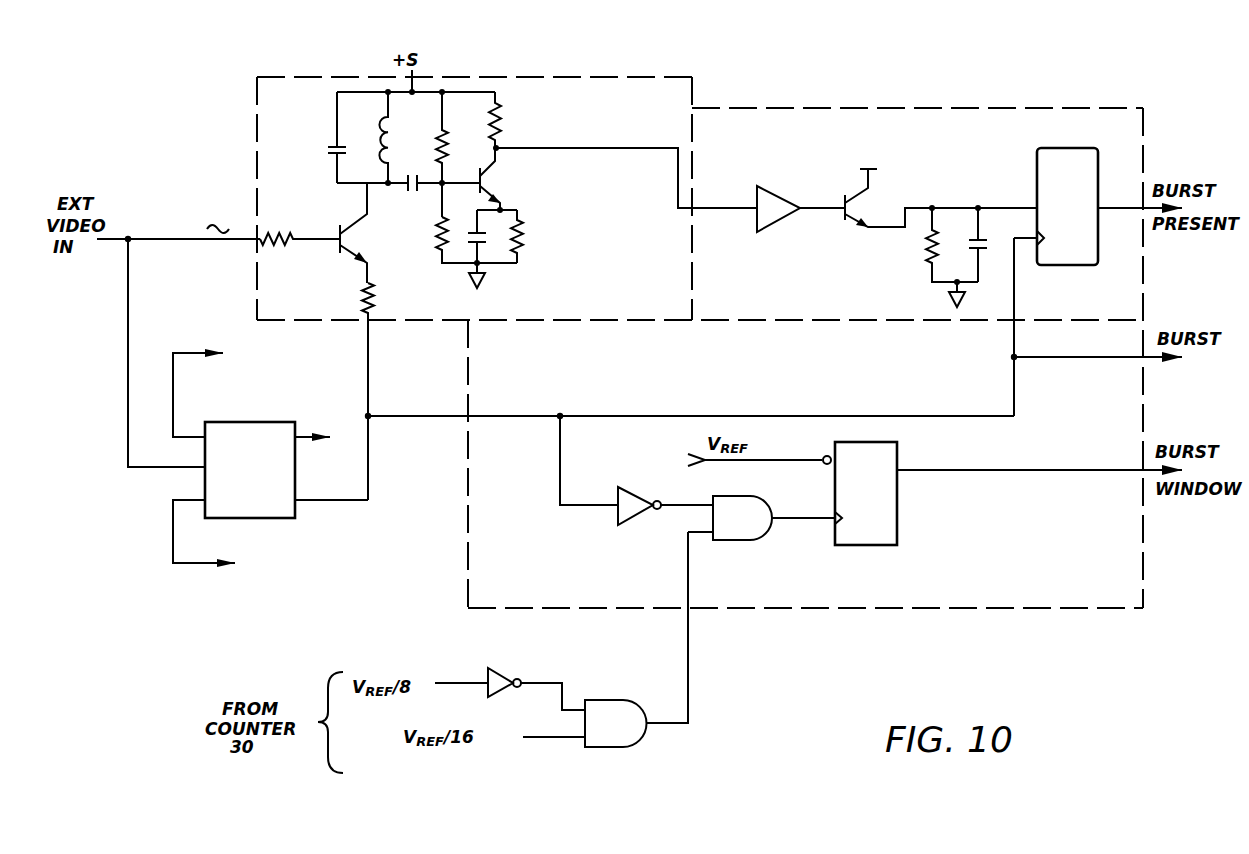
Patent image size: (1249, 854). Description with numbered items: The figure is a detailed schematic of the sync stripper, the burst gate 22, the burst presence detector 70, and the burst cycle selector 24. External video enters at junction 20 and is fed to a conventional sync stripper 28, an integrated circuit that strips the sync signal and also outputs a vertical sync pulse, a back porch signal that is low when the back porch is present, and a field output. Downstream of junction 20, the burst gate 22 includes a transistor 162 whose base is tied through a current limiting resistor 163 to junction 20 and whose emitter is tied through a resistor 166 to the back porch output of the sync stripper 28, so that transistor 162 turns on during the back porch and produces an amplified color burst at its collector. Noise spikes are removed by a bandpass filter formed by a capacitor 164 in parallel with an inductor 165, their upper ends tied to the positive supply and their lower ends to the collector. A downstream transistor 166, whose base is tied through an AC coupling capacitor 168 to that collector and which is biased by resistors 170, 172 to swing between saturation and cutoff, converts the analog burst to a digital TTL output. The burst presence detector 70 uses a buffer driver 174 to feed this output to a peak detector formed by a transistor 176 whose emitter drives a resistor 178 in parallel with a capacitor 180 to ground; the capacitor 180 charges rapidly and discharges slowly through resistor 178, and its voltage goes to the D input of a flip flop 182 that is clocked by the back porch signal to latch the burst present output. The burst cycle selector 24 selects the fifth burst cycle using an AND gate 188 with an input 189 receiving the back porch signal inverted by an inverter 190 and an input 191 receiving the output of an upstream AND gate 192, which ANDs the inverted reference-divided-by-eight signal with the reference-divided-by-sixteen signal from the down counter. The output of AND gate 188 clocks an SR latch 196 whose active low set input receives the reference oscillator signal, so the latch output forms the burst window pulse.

The junction 20 is at (128, 240).
The burst gate 22 is at (253, 137).
The burst cycle selector 24 is at (1150, 413).
The sync stripper 28 is at (228, 420).
The burst presence detector 70 is at (718, 108).
The transistor 162 is at (340, 249).
The current limiting resistor 163 is at (282, 228).
The capacitor 164 is at (330, 140).
The inductor 165 is at (378, 138).
The resistor / downstream transistor 166 is at (358, 306).
The AC coupling capacitor 168 is at (418, 188).
The resistor 170 is at (438, 238).
The resistor 172 is at (453, 152).
The buffer driver 174 is at (778, 193).
The transistor 176 is at (843, 216).
The resistor 178 is at (925, 242).
The capacitor 180 is at (983, 233).
The flip flop 182 is at (1078, 148).
The AND gate 188 is at (770, 538).
The input 189 is at (713, 505).
The inverter 190 is at (640, 450).
The input 191 is at (713, 532).
The AND gate 192 is at (638, 743).
The SR latch 196 is at (898, 454).